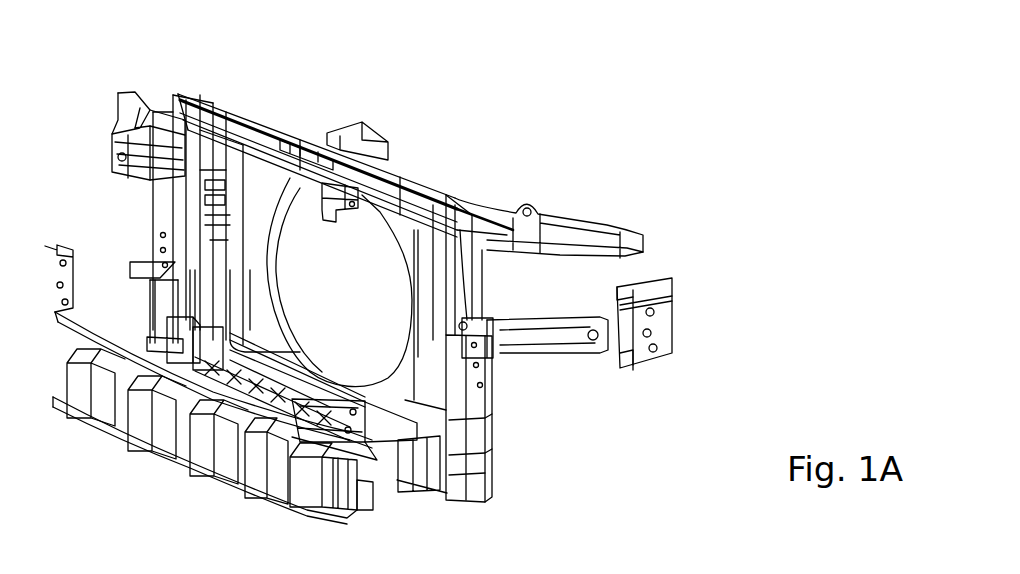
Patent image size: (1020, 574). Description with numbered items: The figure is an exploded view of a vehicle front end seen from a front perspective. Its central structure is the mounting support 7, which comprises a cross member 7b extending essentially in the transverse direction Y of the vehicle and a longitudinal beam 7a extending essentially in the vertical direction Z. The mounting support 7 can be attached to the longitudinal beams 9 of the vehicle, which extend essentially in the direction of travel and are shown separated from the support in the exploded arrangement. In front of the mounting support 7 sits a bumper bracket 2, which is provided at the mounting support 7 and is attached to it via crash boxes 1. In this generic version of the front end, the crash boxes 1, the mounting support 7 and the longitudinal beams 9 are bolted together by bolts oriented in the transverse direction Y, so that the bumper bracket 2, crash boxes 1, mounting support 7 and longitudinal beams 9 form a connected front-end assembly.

The crash box 1 is at (333, 420).
The bumper bracket 2 is at (177, 451).
The mounting support 7 is at (462, 158).
The longitudinal beam 7a is at (492, 460).
The cross member 7b is at (387, 167).
The longitudinal beam of the vehicle 9 is at (663, 333).